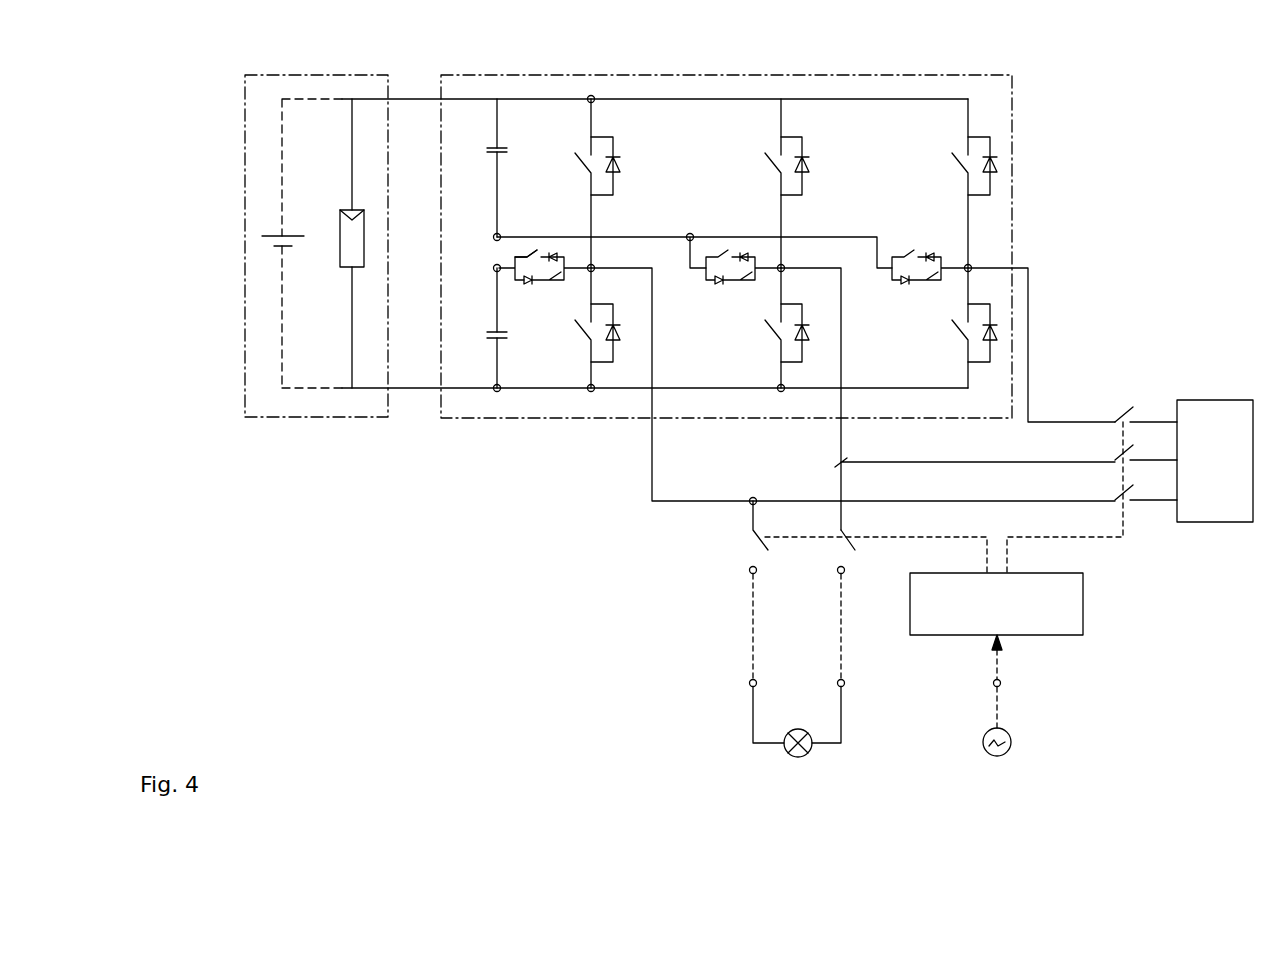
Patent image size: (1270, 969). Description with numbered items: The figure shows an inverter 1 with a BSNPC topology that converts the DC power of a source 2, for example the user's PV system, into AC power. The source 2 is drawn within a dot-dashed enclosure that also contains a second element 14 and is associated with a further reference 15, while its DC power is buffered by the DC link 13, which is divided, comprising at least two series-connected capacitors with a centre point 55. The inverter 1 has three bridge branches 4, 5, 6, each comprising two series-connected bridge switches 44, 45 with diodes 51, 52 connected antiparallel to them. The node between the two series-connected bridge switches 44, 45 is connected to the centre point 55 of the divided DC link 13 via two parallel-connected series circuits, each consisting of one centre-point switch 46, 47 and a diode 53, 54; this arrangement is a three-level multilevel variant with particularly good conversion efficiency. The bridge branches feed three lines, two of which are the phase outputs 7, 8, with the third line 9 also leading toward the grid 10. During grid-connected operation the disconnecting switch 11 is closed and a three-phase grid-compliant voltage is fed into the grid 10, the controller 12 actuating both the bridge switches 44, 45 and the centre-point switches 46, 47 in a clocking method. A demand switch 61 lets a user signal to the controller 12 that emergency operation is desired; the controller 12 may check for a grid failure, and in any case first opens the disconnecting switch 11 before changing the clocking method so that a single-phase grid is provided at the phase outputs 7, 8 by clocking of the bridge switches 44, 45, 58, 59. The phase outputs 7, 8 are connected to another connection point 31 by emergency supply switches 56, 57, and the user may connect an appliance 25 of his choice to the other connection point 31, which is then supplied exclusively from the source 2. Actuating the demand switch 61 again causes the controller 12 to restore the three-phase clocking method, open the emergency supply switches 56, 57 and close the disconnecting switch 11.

The inverter 1 is at (1003, 256).
The source 2 is at (308, 95).
The bridge branch 4 is at (611, 225).
The bridge branch 5 is at (757, 217).
The bridge branch 6 is at (957, 117).
The phase output 7 is at (643, 460).
The phase output 8 is at (836, 464).
The third output line 9 is at (1018, 385).
The grid 10 is at (1218, 542).
The disconnecting switch 11 is at (1120, 415).
The controller 12 is at (1073, 623).
The DC link 13 is at (488, 117).
The photovoltaic generator 14 is at (398, 118).
The DC input connection 15 is at (407, 410).
The appliance 25 is at (803, 770).
The other connection point 31 is at (760, 590).
The bridge switch 44 is at (570, 185).
The bridge switch 45 is at (569, 352).
The centre-point switch 46 is at (517, 268).
The centre-point switch 47 is at (544, 299).
The diode 51 is at (613, 184).
The diode 52 is at (613, 352).
The diode 53 is at (543, 272).
The diode 54 is at (518, 302).
The centre point 55 is at (486, 258).
The emergency supply switch 56 is at (743, 558).
The emergency supply switch 57 is at (828, 565).
The bridge switch 58 is at (760, 185).
The bridge switch 59 is at (760, 350).
The demand switch 61 is at (1003, 762).